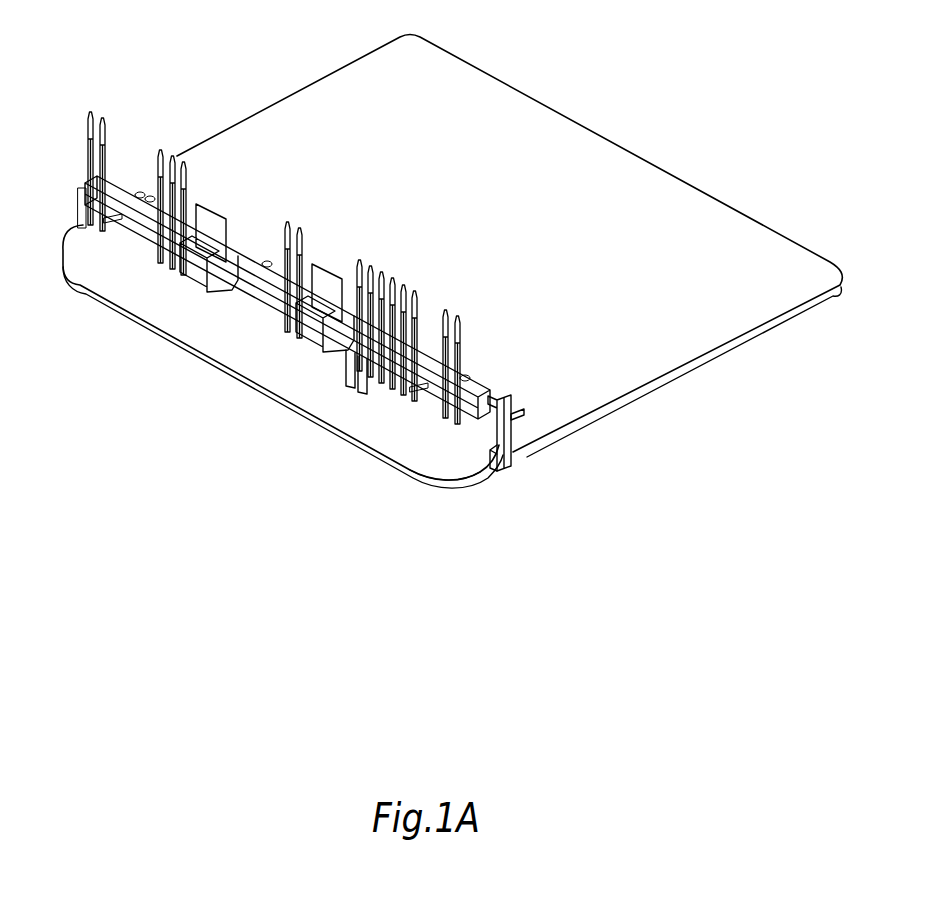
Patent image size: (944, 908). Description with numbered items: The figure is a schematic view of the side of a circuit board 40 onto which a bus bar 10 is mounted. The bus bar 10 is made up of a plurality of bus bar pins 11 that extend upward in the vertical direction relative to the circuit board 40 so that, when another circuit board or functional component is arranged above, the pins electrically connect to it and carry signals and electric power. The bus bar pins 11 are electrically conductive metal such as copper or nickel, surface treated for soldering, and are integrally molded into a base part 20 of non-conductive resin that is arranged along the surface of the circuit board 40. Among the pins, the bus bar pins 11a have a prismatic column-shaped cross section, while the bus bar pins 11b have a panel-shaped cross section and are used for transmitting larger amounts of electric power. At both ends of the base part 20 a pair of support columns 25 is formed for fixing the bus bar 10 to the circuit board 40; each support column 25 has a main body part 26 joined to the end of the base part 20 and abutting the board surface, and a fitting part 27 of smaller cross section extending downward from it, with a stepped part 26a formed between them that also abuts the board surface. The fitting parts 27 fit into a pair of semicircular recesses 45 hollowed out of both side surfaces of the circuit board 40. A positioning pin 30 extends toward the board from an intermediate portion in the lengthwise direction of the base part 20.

The bus bar 10 is at (360, 305).
The bus bar pins 11 is at (276, 244).
The bus bar pins having a prismatic column-shaped cross section 11a is at (446, 312).
The bus bar pins having a panel-shaped cross section 11b is at (267, 268).
The base part 20 is at (277, 305).
The support columns 25 is at (565, 438).
The main body part 26 is at (509, 444).
The stepped part 26a is at (407, 470).
The fitting part 27 is at (511, 465).
The positioning pin 30 is at (350, 393).
The circuit board 40 is at (453, 253).
The recesses 45 is at (510, 448).